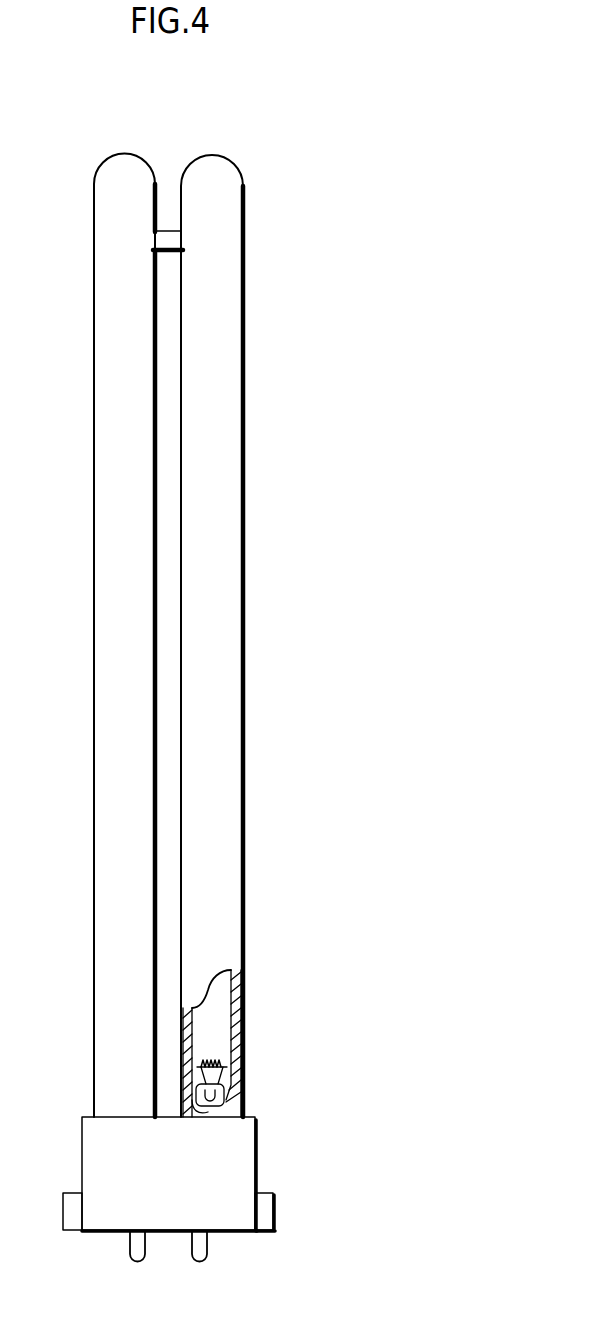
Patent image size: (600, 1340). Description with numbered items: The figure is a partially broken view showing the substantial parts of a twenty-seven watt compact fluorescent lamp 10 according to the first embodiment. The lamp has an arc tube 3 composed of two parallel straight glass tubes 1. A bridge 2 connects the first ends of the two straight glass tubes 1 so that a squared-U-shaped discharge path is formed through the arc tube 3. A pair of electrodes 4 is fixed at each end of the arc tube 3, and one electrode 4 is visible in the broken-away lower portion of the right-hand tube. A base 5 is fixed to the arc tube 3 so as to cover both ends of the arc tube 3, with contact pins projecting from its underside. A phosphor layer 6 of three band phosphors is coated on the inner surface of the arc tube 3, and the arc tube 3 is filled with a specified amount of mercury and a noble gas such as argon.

The straight glass tube 1 is at (112, 460).
The bridge 2 is at (166, 243).
The arc tube 3 is at (244, 591).
The electrode 4 is at (241, 1076).
The base 5 is at (225, 1218).
The phosphor layer 6 is at (243, 1023).
The compact fluorescent lamp 10 is at (387, 292).